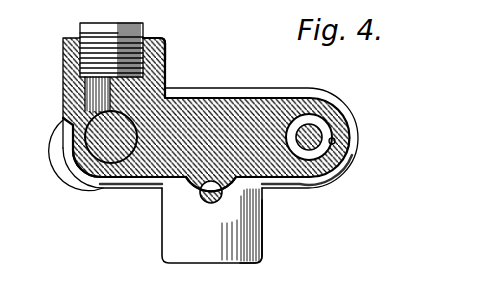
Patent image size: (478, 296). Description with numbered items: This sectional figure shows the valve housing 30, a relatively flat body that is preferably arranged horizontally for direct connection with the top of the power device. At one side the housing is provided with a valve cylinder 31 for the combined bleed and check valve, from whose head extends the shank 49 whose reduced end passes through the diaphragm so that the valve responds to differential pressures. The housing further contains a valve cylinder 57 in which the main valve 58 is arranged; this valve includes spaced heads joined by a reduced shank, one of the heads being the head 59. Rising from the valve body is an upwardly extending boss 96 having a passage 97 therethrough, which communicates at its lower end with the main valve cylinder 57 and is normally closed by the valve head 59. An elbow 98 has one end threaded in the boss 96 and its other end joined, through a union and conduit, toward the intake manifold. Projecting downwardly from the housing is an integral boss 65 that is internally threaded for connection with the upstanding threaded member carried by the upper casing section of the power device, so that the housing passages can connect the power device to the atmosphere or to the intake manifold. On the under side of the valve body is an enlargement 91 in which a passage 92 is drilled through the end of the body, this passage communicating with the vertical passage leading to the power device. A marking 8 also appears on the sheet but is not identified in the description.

The bracket body 8 is at (194, 94).
The valve housing 30 is at (211, 99).
The valve cylinder 31 is at (334, 142).
The shank 49 is at (318, 128).
The valve cylinder 57 is at (107, 168).
The main valve 58 is at (137, 116).
The head 59 is at (97, 145).
The boss 65 is at (263, 230).
The enlargement 91 is at (188, 203).
The passage 92 is at (205, 212).
The boss 96 is at (165, 50).
The passage 97 is at (123, 88).
The elbow 98 is at (80, 28).